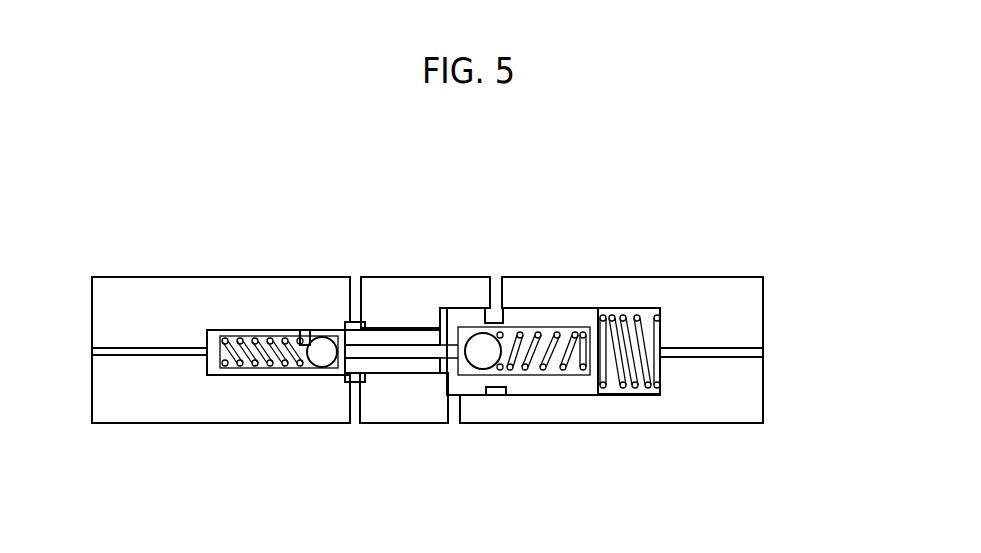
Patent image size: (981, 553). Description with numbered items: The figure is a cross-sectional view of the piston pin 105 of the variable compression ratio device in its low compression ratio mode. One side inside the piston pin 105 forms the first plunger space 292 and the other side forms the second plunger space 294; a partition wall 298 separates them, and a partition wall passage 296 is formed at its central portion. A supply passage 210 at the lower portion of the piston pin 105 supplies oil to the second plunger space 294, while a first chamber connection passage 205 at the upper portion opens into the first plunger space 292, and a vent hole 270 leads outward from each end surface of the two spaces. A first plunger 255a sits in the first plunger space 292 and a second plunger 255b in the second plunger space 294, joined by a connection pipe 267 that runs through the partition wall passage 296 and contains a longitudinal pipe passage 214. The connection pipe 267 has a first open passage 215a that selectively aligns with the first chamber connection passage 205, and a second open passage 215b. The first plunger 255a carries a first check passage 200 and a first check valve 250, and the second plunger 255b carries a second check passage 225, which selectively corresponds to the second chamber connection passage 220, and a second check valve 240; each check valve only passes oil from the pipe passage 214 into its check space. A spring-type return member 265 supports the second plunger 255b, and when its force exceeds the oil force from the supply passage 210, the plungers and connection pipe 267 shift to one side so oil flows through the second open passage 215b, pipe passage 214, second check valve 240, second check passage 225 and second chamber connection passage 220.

The piston pin 105 is at (143, 292).
The vent hole 270 is at (97, 351).
The first check passage 200 is at (305, 329).
The first open passage 215a is at (333, 328).
The second open passage 215b is at (446, 386).
The first chamber connection passage 205 is at (357, 278).
The partition wall passage 296 is at (383, 328).
The pipe passage 214 is at (396, 354).
The second chamber connection passage 220 is at (497, 290).
The second check passage 225 is at (522, 356).
The return member 265 is at (632, 308).
The first plunger 255a is at (231, 376).
The first plunger space 292 is at (287, 373).
The first check valve 250 is at (325, 369).
The connection pipe 267 is at (392, 367).
The partition wall 298 is at (408, 358).
The supply passage 210 is at (457, 408).
The second check valve 240 is at (488, 394).
The second plunger 255b is at (557, 385).
The second plunger space 294 is at (630, 394).